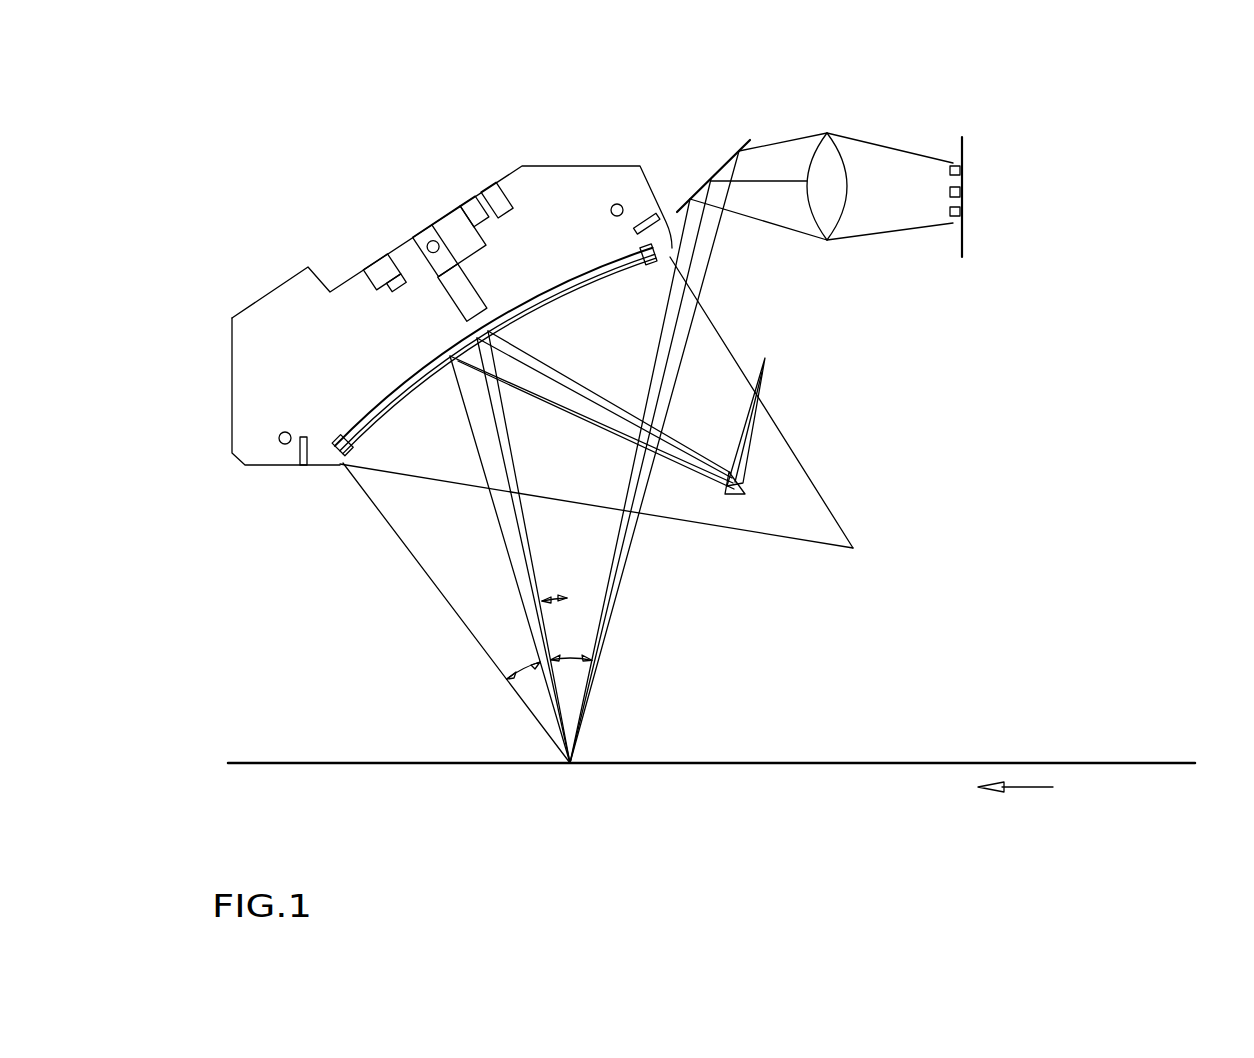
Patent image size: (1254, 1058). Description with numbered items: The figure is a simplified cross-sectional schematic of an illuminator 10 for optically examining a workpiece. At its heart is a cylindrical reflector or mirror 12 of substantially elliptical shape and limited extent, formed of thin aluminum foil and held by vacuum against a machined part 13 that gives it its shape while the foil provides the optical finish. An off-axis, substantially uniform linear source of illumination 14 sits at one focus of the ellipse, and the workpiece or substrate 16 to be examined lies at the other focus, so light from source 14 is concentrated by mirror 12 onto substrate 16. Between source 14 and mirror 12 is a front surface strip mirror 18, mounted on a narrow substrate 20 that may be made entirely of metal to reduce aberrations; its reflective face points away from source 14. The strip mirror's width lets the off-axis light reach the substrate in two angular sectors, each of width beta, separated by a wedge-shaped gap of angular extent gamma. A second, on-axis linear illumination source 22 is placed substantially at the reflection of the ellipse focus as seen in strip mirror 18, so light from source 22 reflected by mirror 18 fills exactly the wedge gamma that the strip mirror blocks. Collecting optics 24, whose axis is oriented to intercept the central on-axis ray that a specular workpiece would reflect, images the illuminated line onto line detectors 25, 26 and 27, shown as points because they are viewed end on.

The illuminator 10 is at (1048, 392).
The cylindrical reflector or mirror 12 is at (366, 429).
The machined part 13 is at (563, 200).
The off-axis linear source of illumination 14 is at (853, 548).
The workpiece or substrate 16 is at (717, 762).
The front surface strip mirror 18 is at (728, 483).
The substrate 20 is at (746, 489).
The on-axis linear illumination source 22 is at (766, 362).
The collecting optics 24 is at (805, 111).
The line detector 25 is at (960, 172).
The line detector 26 is at (960, 194).
The line detector 27 is at (962, 211).